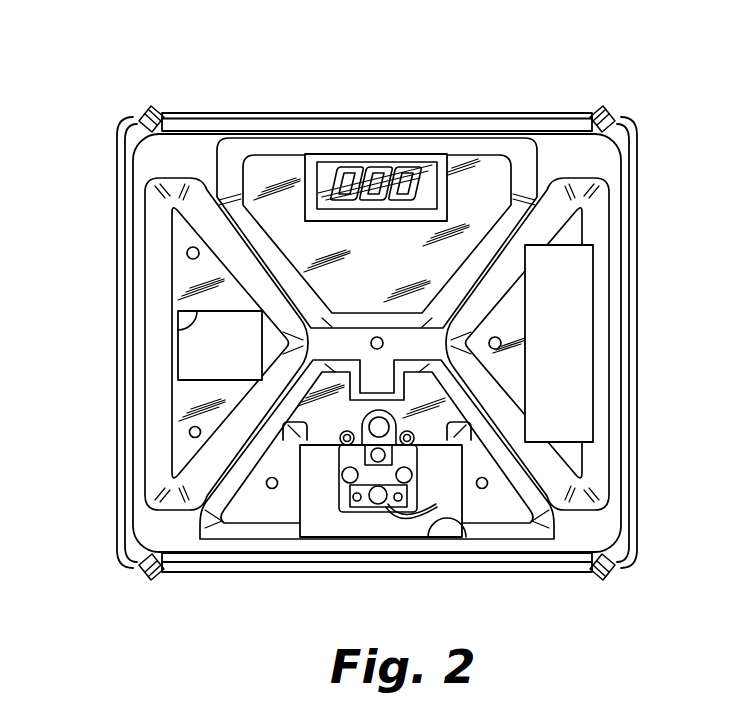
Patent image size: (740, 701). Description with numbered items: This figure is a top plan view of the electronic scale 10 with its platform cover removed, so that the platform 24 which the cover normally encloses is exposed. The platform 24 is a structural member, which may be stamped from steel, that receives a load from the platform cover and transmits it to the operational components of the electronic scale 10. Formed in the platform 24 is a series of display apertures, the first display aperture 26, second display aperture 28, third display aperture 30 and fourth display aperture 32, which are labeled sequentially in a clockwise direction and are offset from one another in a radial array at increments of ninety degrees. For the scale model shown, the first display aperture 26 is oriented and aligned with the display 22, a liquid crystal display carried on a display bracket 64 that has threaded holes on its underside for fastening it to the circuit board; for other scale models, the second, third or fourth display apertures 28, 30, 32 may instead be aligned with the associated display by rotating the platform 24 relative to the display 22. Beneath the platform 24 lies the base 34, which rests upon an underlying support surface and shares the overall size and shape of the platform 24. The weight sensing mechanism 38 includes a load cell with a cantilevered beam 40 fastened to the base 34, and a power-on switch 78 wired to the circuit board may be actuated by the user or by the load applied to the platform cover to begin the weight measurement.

The electronic scale 10 is at (591, 29).
The display 22 is at (397, 139).
The platform 24 is at (204, 113).
The first display aperture 26 is at (428, 156).
The second display aperture 28 is at (547, 250).
The third display aperture 30 is at (450, 521).
The fourth display aperture 32 is at (151, 319).
The base 34 is at (229, 357).
The weight sensing mechanism 38 is at (345, 452).
The cantilevered beam 40 is at (347, 462).
The display bracket 64 is at (396, 156).
The power-on switch 78 is at (378, 497).